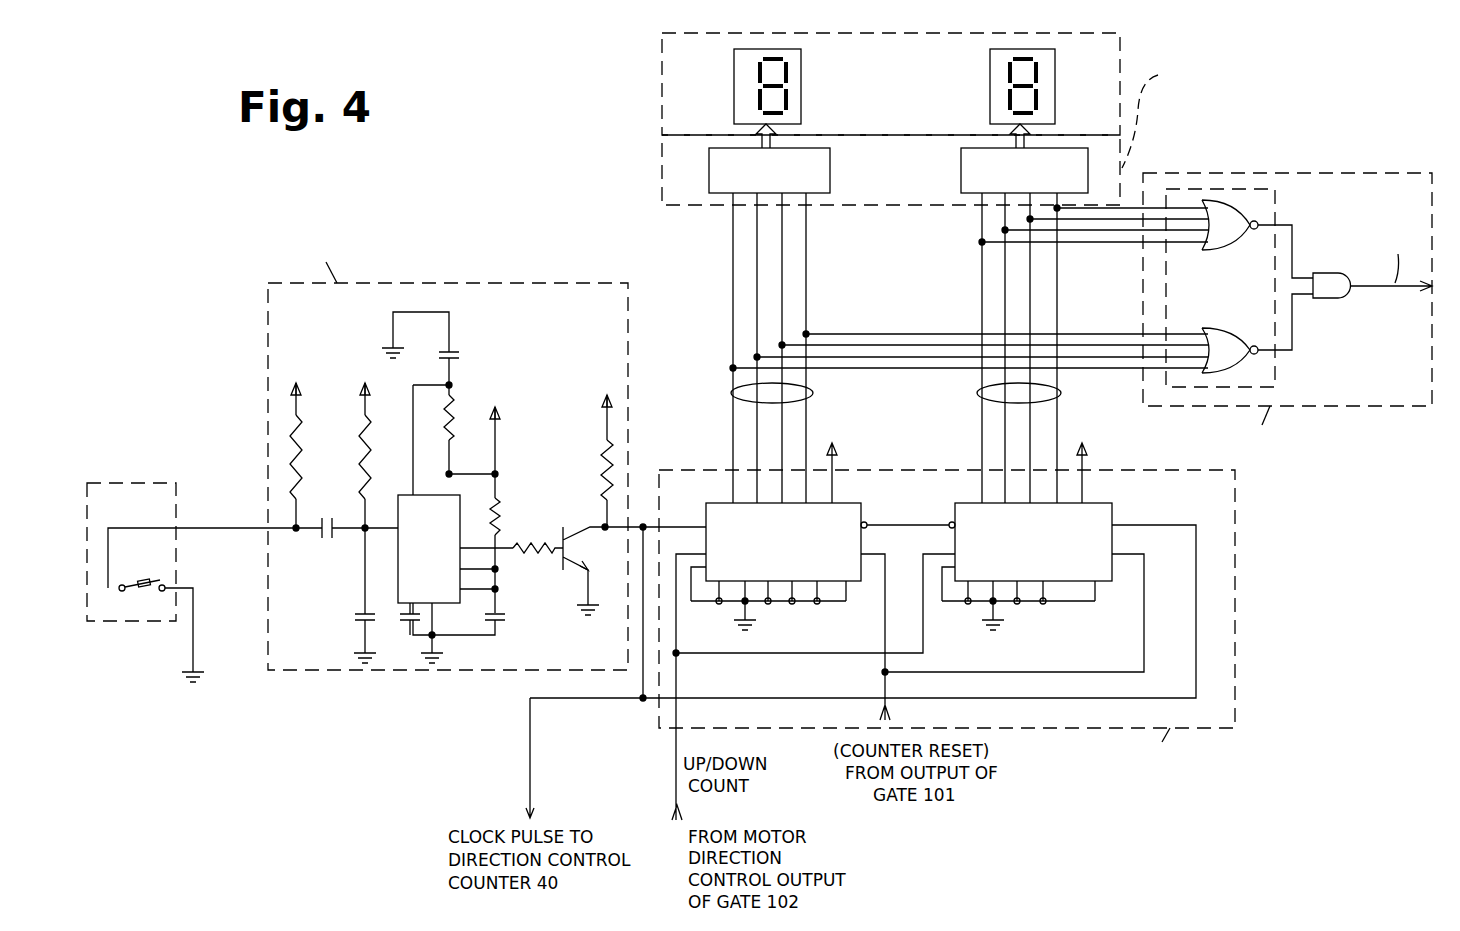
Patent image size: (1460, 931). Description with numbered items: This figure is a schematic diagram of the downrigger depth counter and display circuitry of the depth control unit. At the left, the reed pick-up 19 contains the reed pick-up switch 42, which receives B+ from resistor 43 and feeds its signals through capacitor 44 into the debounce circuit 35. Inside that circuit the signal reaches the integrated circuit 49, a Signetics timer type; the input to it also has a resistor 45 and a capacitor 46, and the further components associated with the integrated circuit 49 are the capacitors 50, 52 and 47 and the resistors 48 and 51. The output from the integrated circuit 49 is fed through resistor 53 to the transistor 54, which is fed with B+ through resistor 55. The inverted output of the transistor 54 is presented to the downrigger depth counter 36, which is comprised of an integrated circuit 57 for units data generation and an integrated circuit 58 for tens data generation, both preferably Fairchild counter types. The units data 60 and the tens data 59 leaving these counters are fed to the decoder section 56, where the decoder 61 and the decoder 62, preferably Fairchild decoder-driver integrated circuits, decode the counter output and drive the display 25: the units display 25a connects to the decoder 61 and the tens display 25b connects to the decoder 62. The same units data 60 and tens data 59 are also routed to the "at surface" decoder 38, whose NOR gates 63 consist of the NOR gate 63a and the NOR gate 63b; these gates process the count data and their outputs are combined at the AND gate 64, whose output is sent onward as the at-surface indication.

The reed pick up 19 is at (152, 483).
The display 25 is at (660, 80).
The units display 25a is at (802, 85).
The tens display 25b is at (988, 85).
The debounce circuit 35 is at (560, 283).
The downrigger depth counter 36 is at (1237, 660).
The "at surface" decoder 38 is at (1192, 408).
The reed pick-up switch 42 is at (148, 578).
The resistor 43 is at (300, 448).
The capacitor 44 is at (320, 537).
The resistor 45 is at (368, 448).
The capacitor 46 is at (355, 617).
The capacitor 47 is at (455, 350).
The resistor 48 is at (453, 425).
The integrated circuit 49 is at (437, 563).
The capacitor 50 is at (412, 630).
The resistor 51 is at (500, 515).
The capacitor 52 is at (498, 632).
The resistor 53 is at (537, 545).
The transistor 54 is at (580, 548).
The resistor 55 is at (591, 451).
The decoder 56 is at (660, 172).
The integrated circuit 57 is at (784, 560).
The integrated circuit 58 is at (1044, 560).
The tens data 59 is at (1062, 394).
The units data 60 is at (733, 398).
The decoder 61 is at (777, 181).
The decoder 62 is at (1032, 181).
The NOR gates 63 is at (1166, 285).
The NOR gate 63a is at (1222, 240).
The NOR gate 63b is at (1226, 334).
The AND gate 64 is at (1340, 294).